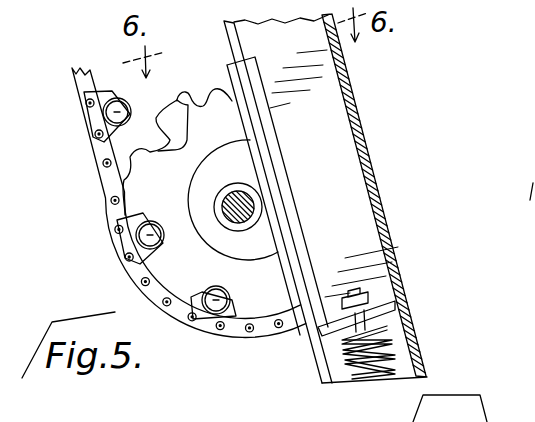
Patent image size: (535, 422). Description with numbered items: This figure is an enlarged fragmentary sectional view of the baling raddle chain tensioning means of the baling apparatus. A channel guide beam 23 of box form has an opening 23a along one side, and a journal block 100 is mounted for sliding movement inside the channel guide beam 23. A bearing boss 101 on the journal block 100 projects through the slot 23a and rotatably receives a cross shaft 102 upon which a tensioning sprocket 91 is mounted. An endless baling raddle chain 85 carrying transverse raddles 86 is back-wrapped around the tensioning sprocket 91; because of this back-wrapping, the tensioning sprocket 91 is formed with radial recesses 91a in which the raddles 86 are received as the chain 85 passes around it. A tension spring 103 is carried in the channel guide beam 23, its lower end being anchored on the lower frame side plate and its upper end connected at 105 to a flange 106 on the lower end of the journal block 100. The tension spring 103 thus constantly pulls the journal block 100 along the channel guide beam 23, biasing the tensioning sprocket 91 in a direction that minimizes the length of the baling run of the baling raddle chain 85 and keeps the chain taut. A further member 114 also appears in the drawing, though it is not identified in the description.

The side plate 23 is at (410, 333).
The side plate 23a is at (316, 361).
The guide track 85 is at (115, 183).
The rollers 86 is at (100, 135).
The roller bracket 91 is at (165, 262).
The cam plate 91a is at (177, 100).
The rail 100 is at (287, 193).
The pivot plate 101 is at (233, 162).
The pivot pin 102 is at (243, 224).
The spring 103 is at (378, 368).
The bolt 105 is at (366, 290).
The bracket plate 106 is at (378, 295).
The support member 114 is at (460, 410).